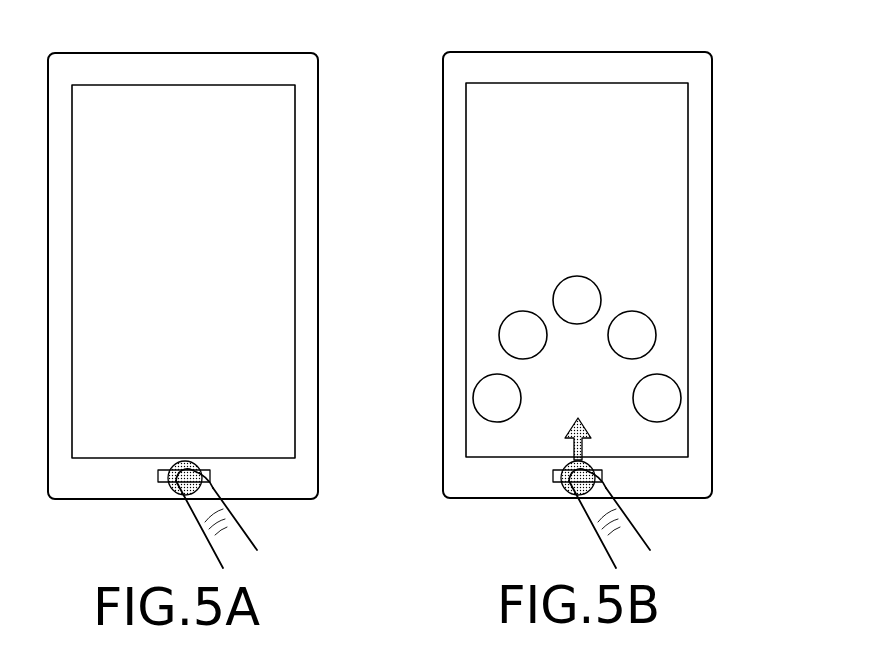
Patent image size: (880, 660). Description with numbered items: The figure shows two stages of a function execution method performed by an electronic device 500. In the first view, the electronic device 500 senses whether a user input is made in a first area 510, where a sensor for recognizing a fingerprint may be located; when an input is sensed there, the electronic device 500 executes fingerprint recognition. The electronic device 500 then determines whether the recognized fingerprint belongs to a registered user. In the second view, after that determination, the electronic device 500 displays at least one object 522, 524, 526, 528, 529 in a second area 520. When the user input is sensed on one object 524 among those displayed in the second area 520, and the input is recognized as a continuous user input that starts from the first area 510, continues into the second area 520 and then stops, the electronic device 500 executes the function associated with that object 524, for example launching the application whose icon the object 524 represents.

In FIG. 5A, the electronic device 500 is at (185, 53).
In FIG. 5B, the electronic device 500 is at (580, 52).
In FIG. 5A, the first area 510 is at (158, 476).
In FIG. 5B, the second area 520 is at (688, 211).
In FIG. 5B, the object 522 is at (521, 389).
In FIG. 5B, the object 524 is at (523, 311).
In FIG. 5B, the object 526 is at (577, 276).
In FIG. 5B, the object 528 is at (632, 311).
In FIG. 5B, the object 529 is at (640, 381).